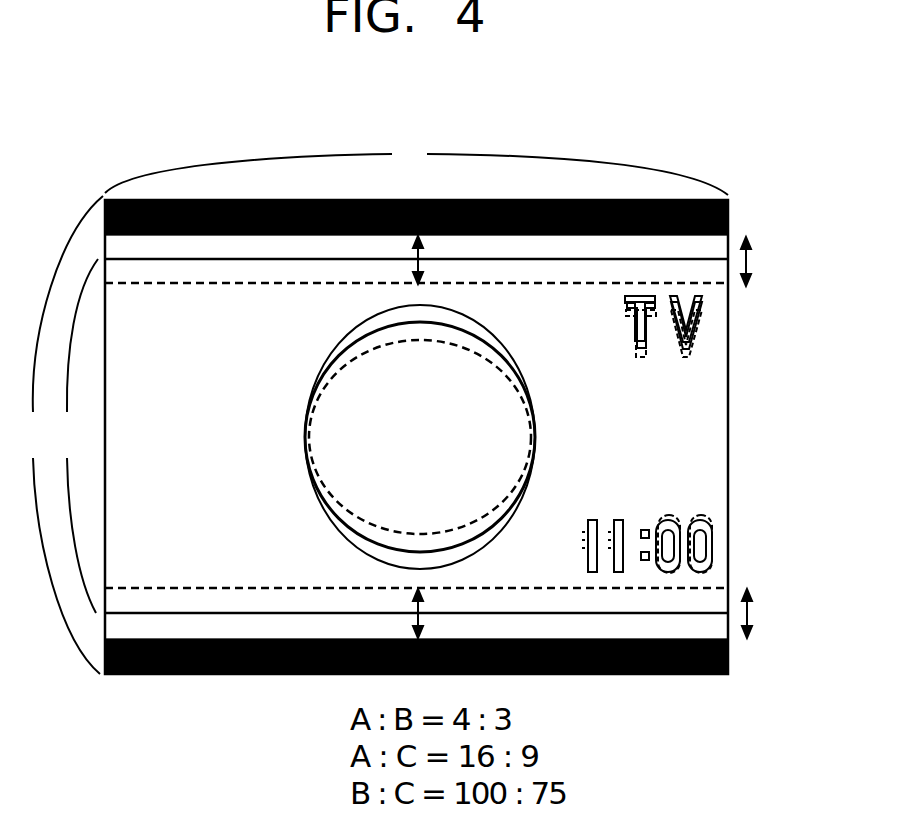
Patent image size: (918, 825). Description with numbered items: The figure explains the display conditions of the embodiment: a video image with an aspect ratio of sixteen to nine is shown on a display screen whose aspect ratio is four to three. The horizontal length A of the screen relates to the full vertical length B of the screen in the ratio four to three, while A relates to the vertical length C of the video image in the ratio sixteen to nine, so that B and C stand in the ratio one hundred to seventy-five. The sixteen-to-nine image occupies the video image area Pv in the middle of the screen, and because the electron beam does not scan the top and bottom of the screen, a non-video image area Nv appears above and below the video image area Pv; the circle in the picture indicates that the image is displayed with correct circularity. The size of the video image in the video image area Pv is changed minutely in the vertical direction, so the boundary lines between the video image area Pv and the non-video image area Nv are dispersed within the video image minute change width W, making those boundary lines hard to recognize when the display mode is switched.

The horizontal length of the display screen A is at (416, 166).
The length of the display screen in the vertical direction B is at (63, 435).
The vertical length of the video image area C is at (77, 436).
The video image minute change width W is at (601, 437).
The non-video image area Nv is at (728, 218).
The video image area Pv is at (705, 404).